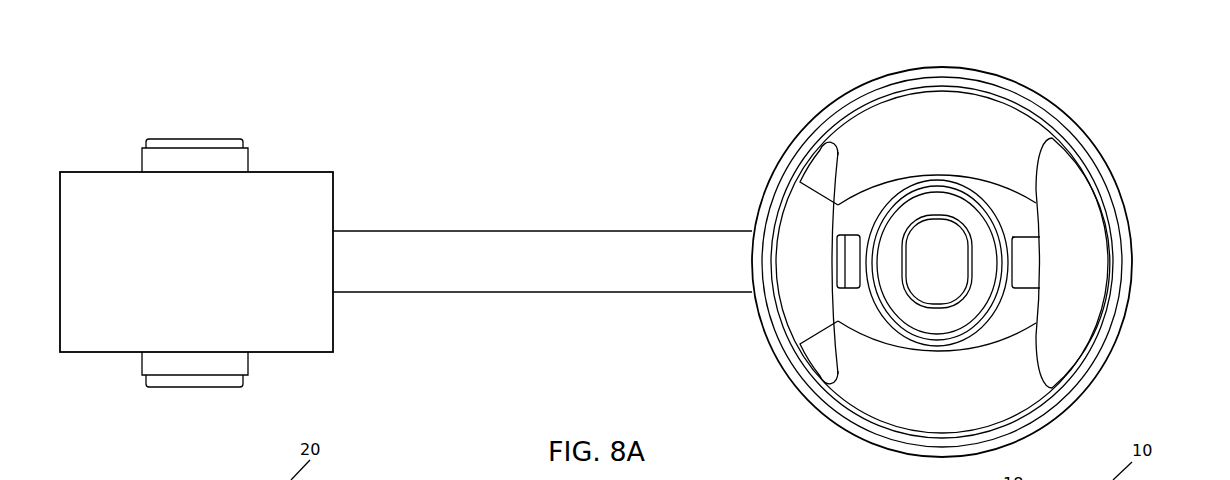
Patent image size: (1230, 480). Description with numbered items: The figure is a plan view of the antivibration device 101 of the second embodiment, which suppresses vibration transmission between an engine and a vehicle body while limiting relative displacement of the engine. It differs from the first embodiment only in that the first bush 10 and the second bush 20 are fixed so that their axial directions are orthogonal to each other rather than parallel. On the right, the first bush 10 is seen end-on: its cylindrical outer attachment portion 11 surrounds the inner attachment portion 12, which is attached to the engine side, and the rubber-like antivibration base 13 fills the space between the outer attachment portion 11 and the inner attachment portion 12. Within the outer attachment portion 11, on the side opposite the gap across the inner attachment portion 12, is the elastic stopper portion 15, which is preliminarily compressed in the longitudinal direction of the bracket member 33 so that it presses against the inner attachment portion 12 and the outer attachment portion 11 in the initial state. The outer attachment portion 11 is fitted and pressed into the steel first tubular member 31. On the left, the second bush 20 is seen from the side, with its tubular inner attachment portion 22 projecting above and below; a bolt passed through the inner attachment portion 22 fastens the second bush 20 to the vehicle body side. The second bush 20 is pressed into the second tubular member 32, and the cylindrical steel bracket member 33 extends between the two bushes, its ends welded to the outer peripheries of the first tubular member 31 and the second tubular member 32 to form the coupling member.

The first bush 10 is at (959, 268).
The outer attachment portion 11 is at (842, 117).
The inner attachment portion 12 is at (940, 200).
The antivibration base 13 is at (885, 403).
The stopper portion 15 is at (827, 302).
The second bush 20 is at (237, 220).
The inner attachment portion 22 is at (197, 145).
The first tubular member 31 is at (778, 352).
The second tubular member 32 is at (317, 312).
The bracket member 33 is at (494, 247).
The antivibration device 101 is at (406, 218).